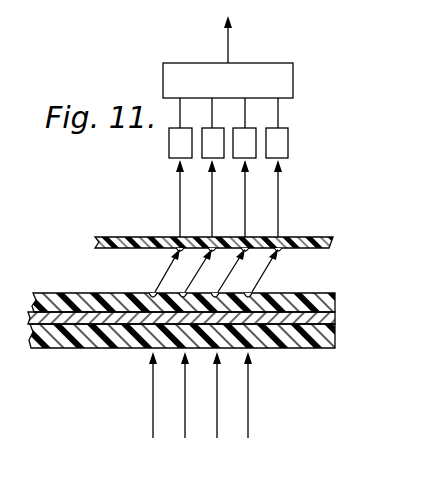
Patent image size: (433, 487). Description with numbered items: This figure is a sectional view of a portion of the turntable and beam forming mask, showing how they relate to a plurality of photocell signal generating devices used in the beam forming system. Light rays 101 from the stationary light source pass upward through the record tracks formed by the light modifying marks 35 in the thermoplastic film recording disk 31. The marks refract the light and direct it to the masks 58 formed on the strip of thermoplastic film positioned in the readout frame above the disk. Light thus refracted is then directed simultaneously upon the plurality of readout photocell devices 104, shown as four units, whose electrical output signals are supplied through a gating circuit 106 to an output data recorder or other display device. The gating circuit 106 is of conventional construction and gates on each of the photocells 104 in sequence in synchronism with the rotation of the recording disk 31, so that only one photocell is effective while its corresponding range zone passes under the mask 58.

The gating circuit 106 is at (293, 82).
The readout photocell devices 104 is at (297, 146).
The thermoplastic film mask 58 is at (298, 237).
The light modifying marks 35 is at (252, 292).
The thermoplastic film recording disk 31 is at (80, 319).
The light rays 101 is at (248, 390).